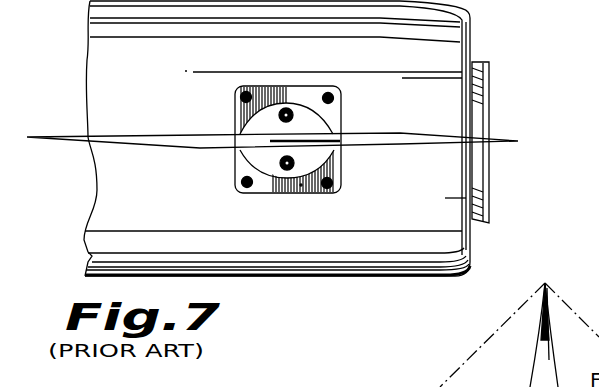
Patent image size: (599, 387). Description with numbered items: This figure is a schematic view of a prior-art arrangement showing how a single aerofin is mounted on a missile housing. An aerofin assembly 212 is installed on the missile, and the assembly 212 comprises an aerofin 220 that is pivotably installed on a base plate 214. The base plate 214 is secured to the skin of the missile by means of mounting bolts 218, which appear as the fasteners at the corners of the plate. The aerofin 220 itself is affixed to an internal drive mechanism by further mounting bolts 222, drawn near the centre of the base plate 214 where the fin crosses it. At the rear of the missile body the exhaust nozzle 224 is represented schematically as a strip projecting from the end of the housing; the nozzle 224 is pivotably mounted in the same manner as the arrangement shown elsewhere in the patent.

The aerofin assembly 212 is at (314, 86).
The base plate 214 is at (343, 118).
The mounting bolts 218 is at (342, 170).
The aerofin 220 is at (211, 104).
The mounting bolts 222 is at (301, 186).
The exhaust nozzle 224 is at (491, 61).